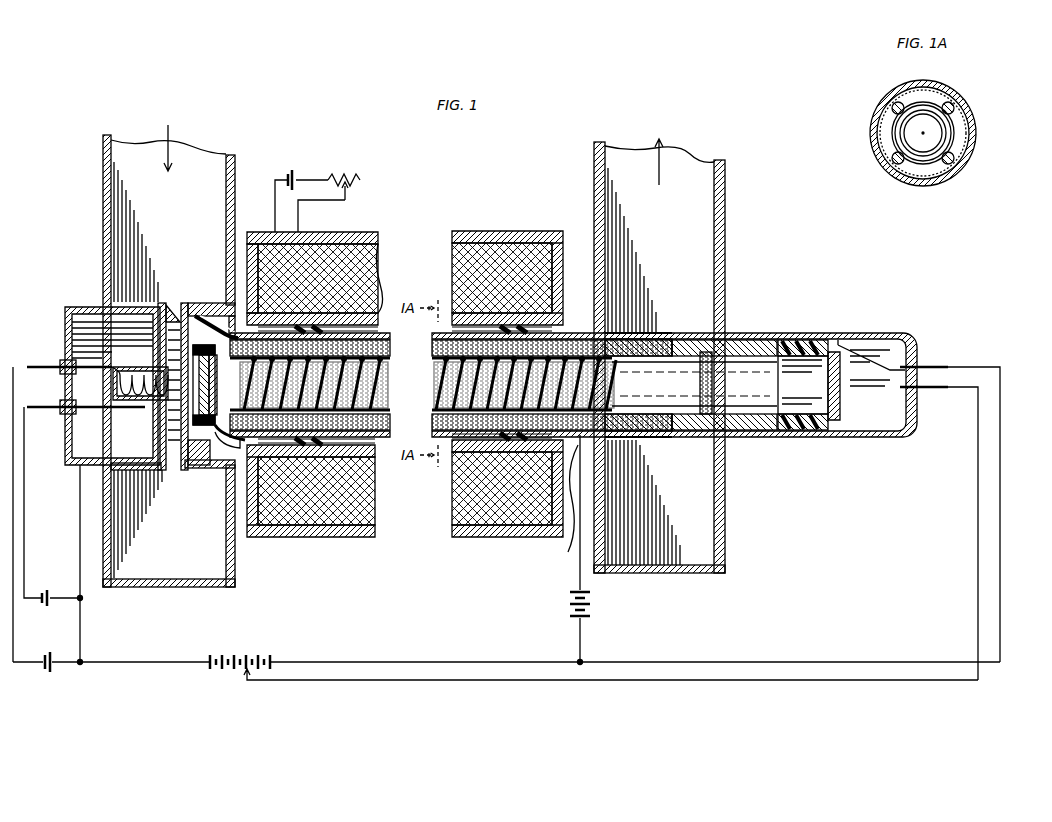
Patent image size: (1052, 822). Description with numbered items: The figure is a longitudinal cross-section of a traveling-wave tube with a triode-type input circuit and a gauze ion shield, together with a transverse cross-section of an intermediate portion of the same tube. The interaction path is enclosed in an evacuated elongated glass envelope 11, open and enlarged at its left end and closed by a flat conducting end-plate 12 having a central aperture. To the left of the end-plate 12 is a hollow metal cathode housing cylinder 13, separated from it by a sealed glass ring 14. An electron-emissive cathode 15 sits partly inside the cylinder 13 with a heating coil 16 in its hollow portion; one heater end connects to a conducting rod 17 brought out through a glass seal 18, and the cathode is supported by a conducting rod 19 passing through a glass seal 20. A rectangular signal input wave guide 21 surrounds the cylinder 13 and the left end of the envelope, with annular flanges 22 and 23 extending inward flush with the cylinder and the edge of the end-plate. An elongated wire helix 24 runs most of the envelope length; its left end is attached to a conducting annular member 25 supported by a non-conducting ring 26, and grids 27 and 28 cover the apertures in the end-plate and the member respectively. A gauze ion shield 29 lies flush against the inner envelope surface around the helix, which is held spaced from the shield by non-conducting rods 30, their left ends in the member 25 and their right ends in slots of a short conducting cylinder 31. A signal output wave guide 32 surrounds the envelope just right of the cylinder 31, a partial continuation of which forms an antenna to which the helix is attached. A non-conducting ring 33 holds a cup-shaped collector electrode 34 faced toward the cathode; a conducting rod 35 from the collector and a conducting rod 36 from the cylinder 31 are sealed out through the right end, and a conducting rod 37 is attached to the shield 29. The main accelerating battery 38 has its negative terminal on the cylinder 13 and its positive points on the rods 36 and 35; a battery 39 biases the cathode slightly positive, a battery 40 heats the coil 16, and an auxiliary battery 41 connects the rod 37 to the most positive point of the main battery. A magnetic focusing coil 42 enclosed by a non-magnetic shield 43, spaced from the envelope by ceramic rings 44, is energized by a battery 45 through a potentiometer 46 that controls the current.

In FIG. 1, the glass envelope 11 is at (832, 333).
In FIG. 1A, the glass envelope 11 is at (872, 152).
In FIG. 1, the end-plate 12 is at (168, 304).
In FIG. 1, the cathode housing cylinder 13 is at (92, 308).
In FIG. 1, the glass ring 14 is at (185, 304).
In FIG. 1, the cathode 15 is at (120, 370).
In FIG. 1, the heating coil 16 is at (118, 384).
In FIG. 1, the conducting rod 17 is at (46, 364).
In FIG. 1, the glass seal 18 is at (64, 360).
In FIG. 1, the conducting rod 19 is at (44, 412).
In FIG. 1, the glass seal 20 is at (72, 414).
In FIG. 1, the signal input wave guide 21 is at (103, 186).
In FIG. 1, the annular flange 22 is at (150, 478).
In FIG. 1, the annular flange 23 is at (200, 468).
In FIG. 1, the wire helix 24 is at (650, 378).
In FIG. 1A, the wire helix 24 is at (947, 139).
In FIG. 1, the annular member 25 is at (222, 438).
In FIG. 1, the non-conducting ring 26 is at (205, 316).
In FIG. 1, the grid 27 is at (192, 400).
In FIG. 1, the grid 28 is at (209, 400).
In FIG. 1, the gauze ion shield 29 is at (432, 343).
In FIG. 1A, the gauze ion shield 29 is at (958, 110).
In FIG. 1, the non-conducting rods 30 is at (704, 380).
In FIG. 1A, the non-conducting rods 30 is at (952, 102).
In FIG. 1, the conducting cylinder 31 is at (760, 336).
In FIG. 1, the signal output wave guide 32 is at (725, 254).
In FIG. 1, the non-conducting ring 33 is at (800, 412).
In FIG. 1, the collector electrode 34 is at (840, 404).
In FIG. 1, the conducting rod 35 is at (932, 388).
In FIG. 1, the conducting rod 36 is at (937, 366).
In FIG. 1, the conducting rod 37 is at (565, 550).
In FIG. 1, the main electron beam accelerating battery 38 is at (243, 655).
In FIG. 1, the battery 39 is at (48, 606).
In FIG. 1, the battery 40 is at (48, 672).
In FIG. 1, the auxiliary battery 41 is at (592, 602).
In FIG. 1, the magnetic focusing coil 42 is at (378, 256).
In FIG. 1, the non-magnetic shield 43 is at (352, 232).
In FIG. 1, the ceramic rings 44 is at (375, 437).
In FIG. 1, the battery 45 is at (292, 168).
In FIG. 1, the potentiometer 46 is at (346, 176).